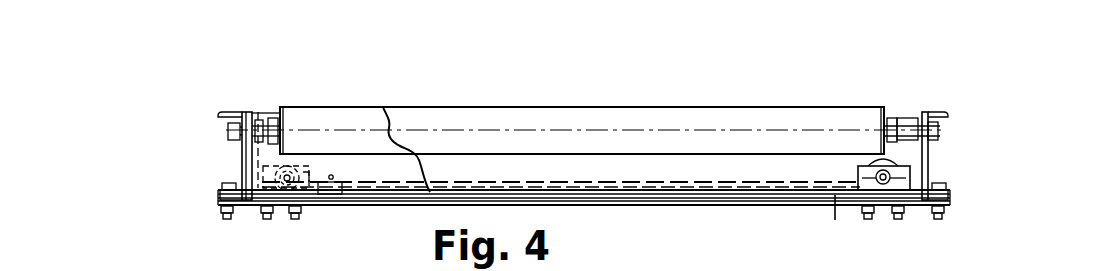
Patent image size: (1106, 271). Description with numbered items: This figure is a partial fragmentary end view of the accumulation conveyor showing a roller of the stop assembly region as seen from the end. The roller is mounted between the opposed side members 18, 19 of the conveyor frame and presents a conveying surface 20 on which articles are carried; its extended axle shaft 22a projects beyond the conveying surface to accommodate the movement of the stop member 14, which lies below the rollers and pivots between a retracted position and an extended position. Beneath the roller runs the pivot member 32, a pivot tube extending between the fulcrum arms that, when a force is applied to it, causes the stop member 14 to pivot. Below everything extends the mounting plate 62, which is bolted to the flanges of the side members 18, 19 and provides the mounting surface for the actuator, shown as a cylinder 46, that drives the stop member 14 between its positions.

The stop member 14 is at (98, 266).
The side member 18 is at (243, 160).
The side member 19 is at (930, 152).
The conveying surface 20 is at (790, 108).
The extended axle shaft 22a is at (905, 113).
The pivot member 32 is at (617, 182).
The cylinder 46 is at (913, 165).
The mounting plate 62 is at (685, 207).